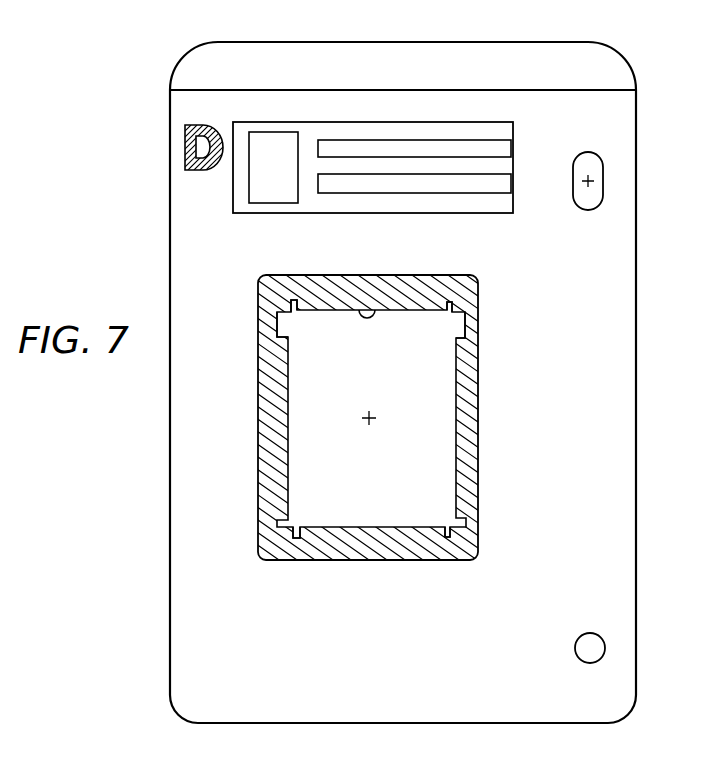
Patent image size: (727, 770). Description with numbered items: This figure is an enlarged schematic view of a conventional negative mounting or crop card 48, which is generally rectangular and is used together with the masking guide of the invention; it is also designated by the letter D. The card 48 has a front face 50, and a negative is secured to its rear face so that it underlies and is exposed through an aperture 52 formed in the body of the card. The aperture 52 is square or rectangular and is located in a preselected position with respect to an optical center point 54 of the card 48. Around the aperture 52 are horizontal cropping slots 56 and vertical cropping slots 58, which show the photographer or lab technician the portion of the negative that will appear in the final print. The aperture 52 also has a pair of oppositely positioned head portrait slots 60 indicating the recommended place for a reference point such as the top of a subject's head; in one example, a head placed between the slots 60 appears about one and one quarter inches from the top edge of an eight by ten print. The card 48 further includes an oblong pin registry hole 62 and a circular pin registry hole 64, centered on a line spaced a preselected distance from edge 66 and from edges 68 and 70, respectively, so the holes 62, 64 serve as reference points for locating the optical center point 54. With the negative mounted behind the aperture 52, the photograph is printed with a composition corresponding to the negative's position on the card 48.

The negative mounting card 48 is at (152, 218).
The front face 50 is at (180, 428).
The aperture 52 is at (371, 318).
The optical center point 54 is at (372, 415).
The horizontal cropping slots 56 is at (277, 312).
The vertical cropping slots 58 is at (292, 305).
The head portrait slots 60 is at (283, 340).
The oblong pin registry hole 62 is at (598, 170).
The circular pin registry hole 64 is at (594, 640).
The edge 66 is at (636, 372).
The edge 68 is at (571, 40).
The edge 70 is at (595, 724).